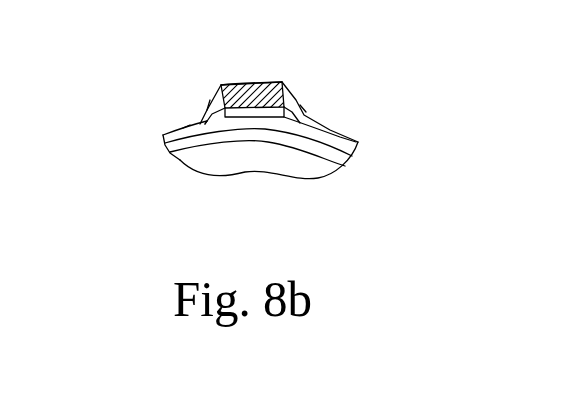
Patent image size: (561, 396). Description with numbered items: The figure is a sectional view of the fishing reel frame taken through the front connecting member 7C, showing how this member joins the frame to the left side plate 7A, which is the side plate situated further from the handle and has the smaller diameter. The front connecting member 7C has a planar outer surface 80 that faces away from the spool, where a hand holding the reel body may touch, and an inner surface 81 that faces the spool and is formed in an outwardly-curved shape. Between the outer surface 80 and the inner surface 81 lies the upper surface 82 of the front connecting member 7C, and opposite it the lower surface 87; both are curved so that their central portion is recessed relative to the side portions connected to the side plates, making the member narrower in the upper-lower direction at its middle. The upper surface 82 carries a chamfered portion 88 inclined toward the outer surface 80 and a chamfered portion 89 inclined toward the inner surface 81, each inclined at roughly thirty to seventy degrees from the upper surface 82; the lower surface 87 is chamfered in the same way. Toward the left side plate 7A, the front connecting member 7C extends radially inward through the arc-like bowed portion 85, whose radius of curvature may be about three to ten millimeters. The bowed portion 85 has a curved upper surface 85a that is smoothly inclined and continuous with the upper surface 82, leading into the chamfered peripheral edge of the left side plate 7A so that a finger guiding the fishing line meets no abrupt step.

The outer surface 80 is at (256, 83).
The inner surface 81 is at (255, 118).
The upper surface 82 is at (210, 97).
The bowed portion 85 is at (186, 120).
The curved upper surface 85a is at (210, 100).
The lower surface 87 is at (299, 98).
The chamfered portion 88 is at (227, 83).
The chamfered portion 89 is at (207, 123).
The left side plate 7A is at (357, 141).
The front connecting member 7C is at (305, 110).